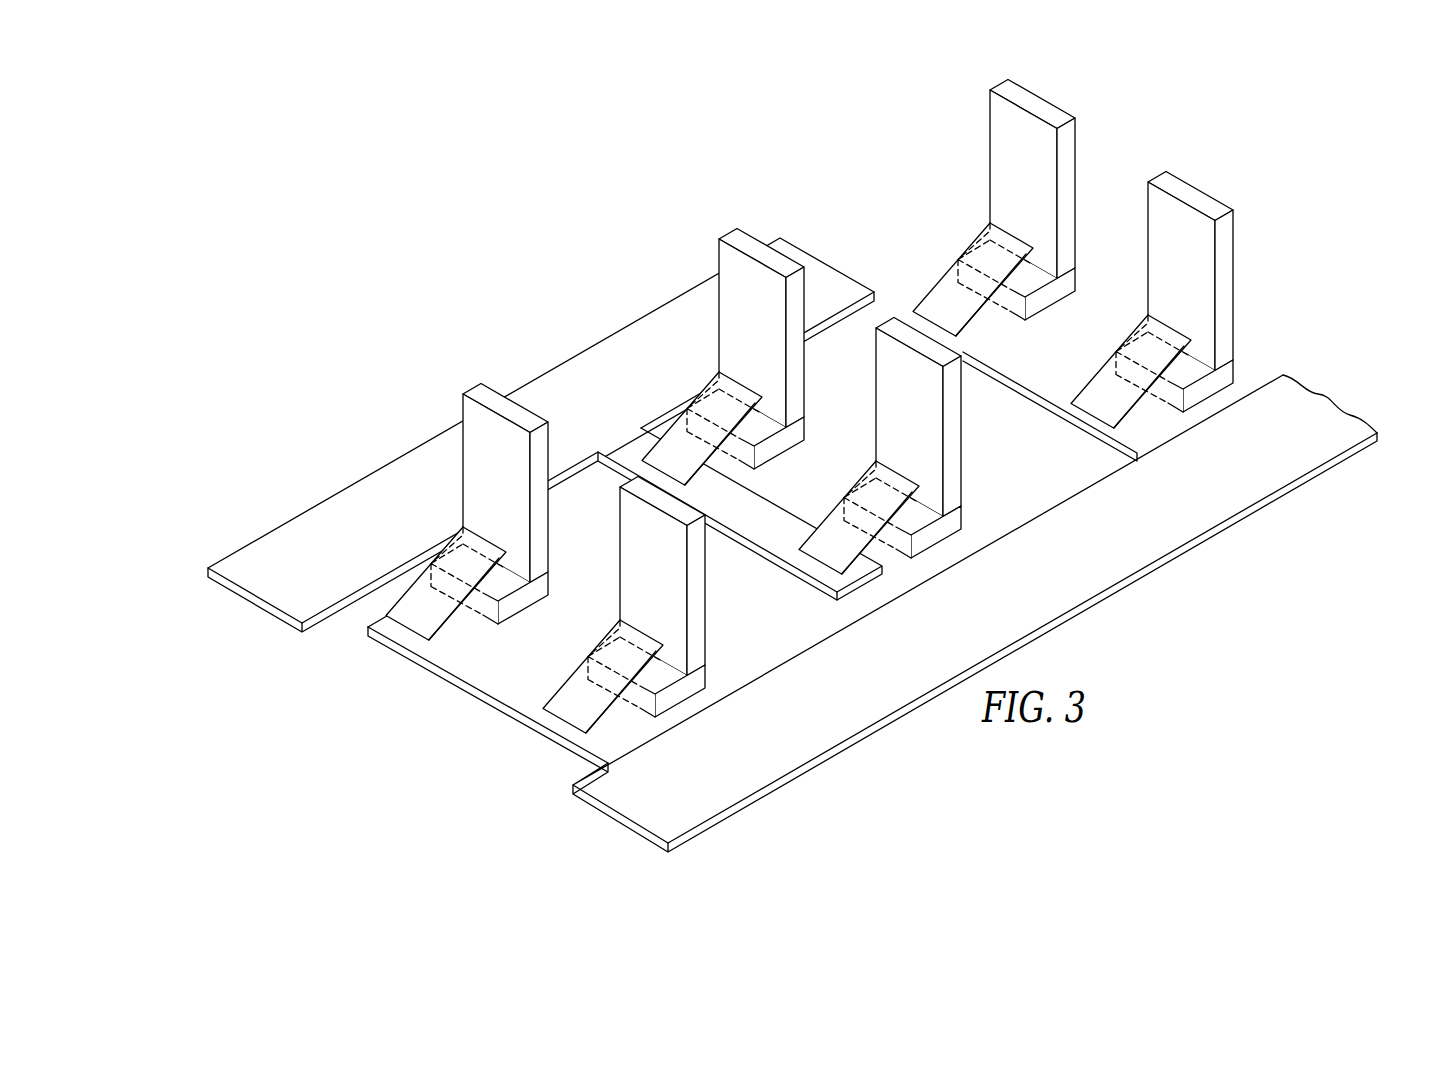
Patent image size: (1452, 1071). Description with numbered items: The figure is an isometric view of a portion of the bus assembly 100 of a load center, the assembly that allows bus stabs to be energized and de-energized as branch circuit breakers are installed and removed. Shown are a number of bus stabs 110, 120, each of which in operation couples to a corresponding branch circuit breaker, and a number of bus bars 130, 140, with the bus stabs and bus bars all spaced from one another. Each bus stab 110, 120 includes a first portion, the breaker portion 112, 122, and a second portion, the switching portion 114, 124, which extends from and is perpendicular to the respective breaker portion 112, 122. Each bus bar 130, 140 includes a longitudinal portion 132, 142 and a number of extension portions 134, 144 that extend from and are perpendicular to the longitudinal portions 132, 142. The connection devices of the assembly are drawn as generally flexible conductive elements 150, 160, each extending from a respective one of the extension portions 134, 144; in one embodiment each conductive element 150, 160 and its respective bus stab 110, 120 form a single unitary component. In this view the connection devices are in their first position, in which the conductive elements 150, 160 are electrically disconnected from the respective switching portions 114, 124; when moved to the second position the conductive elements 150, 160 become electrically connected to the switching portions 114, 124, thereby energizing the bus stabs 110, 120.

The bus assembly 100 is at (789, 455).
The bus stab 110 is at (936, 449).
The breaker portion 112 is at (672, 546).
The switching portion 114 is at (670, 698).
The bus stab 120 is at (778, 365).
The breaker portion 122 is at (535, 438).
The switching portion 124 is at (511, 606).
The bus bar 130 is at (542, 438).
The longitudinal portion 132 is at (430, 455).
The extension portion 134 is at (777, 522).
The bus bar 140 is at (872, 593).
The longitudinal portion 142 is at (1212, 507).
The extension portion 144 is at (504, 689).
The conductive element 150 is at (437, 630).
The conductive element 160 is at (612, 637).